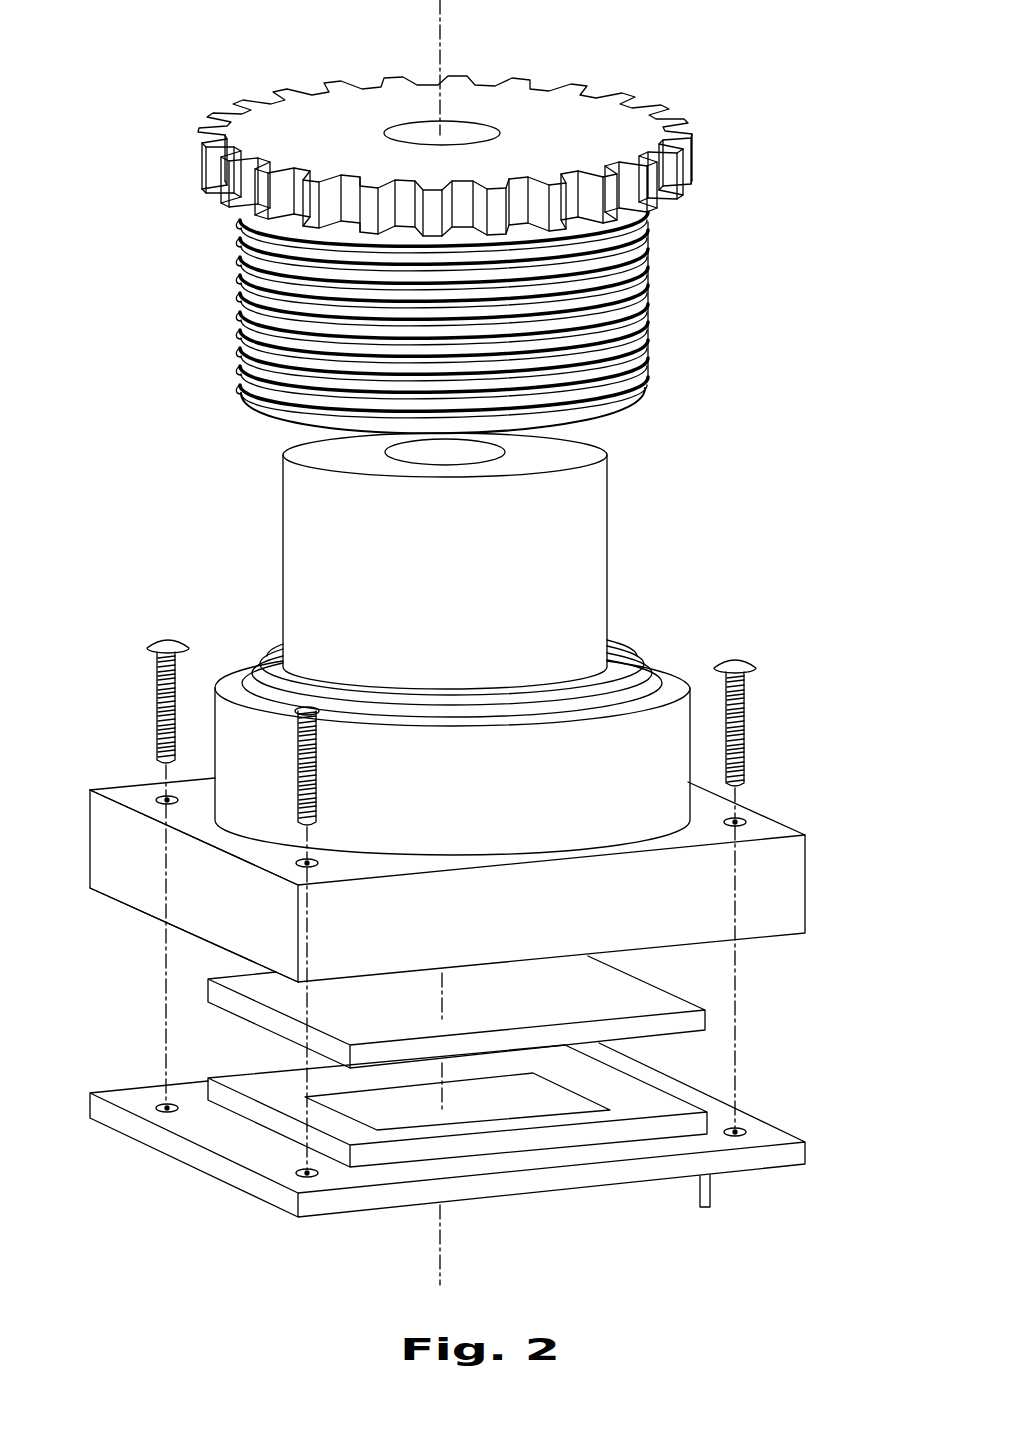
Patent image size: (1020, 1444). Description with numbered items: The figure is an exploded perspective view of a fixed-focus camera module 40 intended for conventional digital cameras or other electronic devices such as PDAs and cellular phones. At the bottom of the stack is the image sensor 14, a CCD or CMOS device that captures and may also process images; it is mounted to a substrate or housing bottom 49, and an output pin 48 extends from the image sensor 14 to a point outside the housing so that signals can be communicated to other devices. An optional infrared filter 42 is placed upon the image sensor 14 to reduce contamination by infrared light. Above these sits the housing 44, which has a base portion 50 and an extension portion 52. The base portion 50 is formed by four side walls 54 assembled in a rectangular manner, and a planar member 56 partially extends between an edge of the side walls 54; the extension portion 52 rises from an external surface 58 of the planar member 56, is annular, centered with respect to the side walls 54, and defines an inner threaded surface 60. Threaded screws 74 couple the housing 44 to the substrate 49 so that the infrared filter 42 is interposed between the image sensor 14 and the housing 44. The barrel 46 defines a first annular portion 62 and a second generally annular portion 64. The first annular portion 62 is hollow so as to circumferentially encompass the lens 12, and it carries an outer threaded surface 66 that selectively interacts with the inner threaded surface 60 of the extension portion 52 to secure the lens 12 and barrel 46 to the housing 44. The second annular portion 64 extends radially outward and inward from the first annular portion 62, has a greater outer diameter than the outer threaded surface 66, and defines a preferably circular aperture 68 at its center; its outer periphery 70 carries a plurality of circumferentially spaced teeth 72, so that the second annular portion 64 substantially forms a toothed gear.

The lens 12 is at (568, 544).
The image sensor 14 is at (668, 1104).
The camera module 40 is at (547, 450).
The infrared filter 42 is at (663, 1007).
The housing 44 is at (474, 994).
The barrel 46 is at (477, 138).
The output pin 48 is at (700, 1196).
The substrate 49 is at (753, 1137).
The base portion 50 is at (464, 867).
The extension portion 52 is at (527, 732).
The side walls 54 is at (780, 886).
The planar member 56 is at (123, 792).
The external surface 58 is at (147, 806).
The inner threaded surface 60 is at (640, 690).
The first annular portion 62 is at (652, 318).
The second annular portion 64 is at (610, 130).
The outer threaded surface 66 is at (648, 268).
The aperture 68 is at (463, 133).
The outer periphery 70 is at (682, 170).
The teeth 72 is at (308, 200).
The threaded screws 74 is at (170, 640).